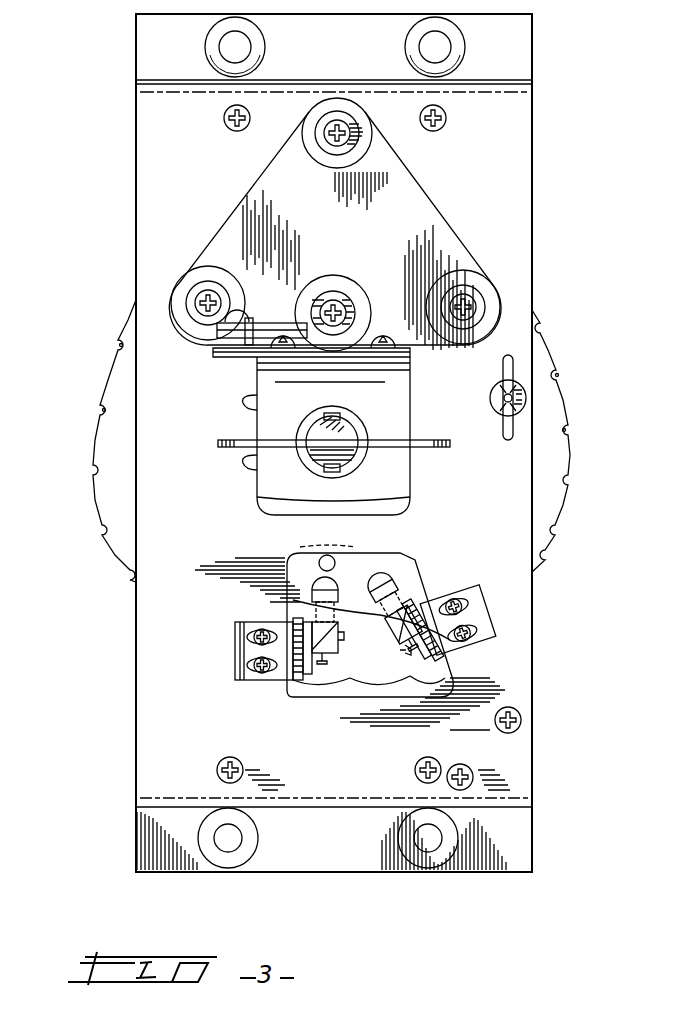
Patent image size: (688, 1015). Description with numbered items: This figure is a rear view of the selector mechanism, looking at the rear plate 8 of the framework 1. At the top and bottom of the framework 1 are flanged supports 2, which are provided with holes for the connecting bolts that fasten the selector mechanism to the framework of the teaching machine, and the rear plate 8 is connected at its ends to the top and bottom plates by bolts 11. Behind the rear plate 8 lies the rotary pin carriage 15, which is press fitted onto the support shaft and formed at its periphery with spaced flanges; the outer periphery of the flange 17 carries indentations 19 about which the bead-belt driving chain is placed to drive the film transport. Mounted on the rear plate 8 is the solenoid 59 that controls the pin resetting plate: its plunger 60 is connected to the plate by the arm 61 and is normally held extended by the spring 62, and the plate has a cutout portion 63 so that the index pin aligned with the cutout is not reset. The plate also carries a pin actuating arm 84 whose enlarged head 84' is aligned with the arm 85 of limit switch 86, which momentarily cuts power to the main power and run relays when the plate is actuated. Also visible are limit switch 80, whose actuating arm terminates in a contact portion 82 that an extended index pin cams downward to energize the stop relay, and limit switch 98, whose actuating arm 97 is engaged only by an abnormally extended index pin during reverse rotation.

The framework 1 is at (130, 161).
The flanged supports 2 is at (338, 53).
The rear plate 8 is at (184, 487).
The bolts 11 is at (228, 125).
The rotary pin carriage 15 is at (86, 471).
The peripheral flange 17 is at (554, 355).
The indentations 19 is at (100, 402).
The solenoid 59 is at (288, 408).
The plunger 60 is at (340, 430).
The arm 61 is at (433, 449).
The spring 62 is at (357, 462).
The cutout portion 63 is at (300, 578).
The limit switch 80 is at (393, 625).
The contact portion 82 is at (378, 570).
The pin actuating arm 84 is at (335, 224).
The enlarged head 84' is at (360, 296).
The arm 85 is at (308, 327).
The limit switch 86 is at (257, 318).
The actuating arm 97 is at (312, 588).
The limit switch 98 is at (300, 608).